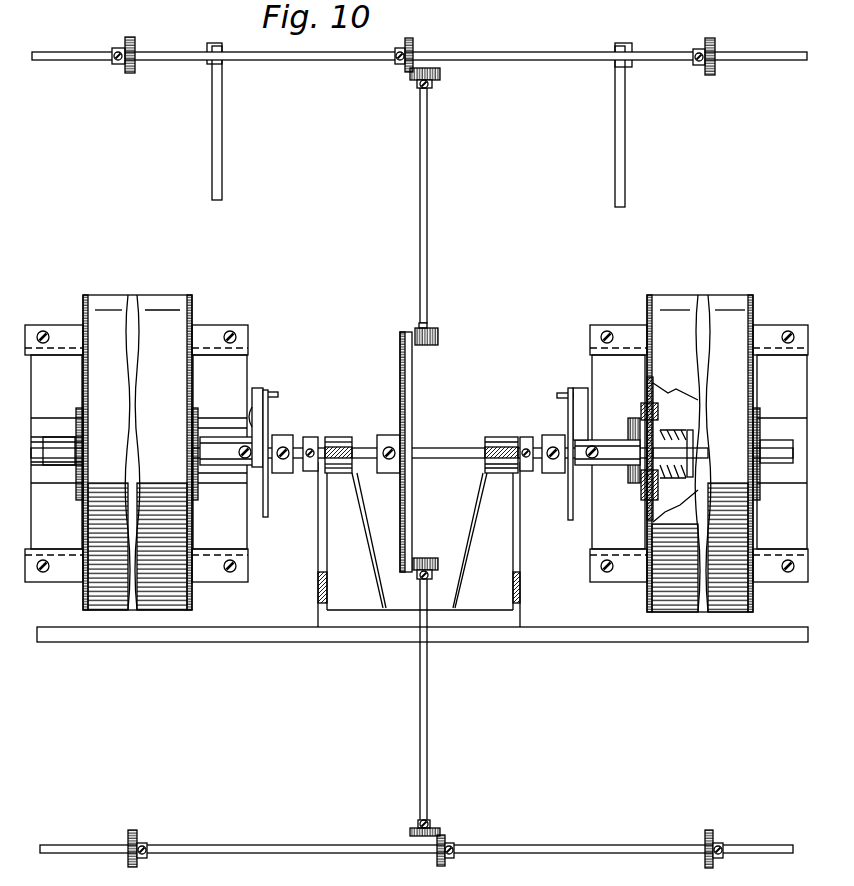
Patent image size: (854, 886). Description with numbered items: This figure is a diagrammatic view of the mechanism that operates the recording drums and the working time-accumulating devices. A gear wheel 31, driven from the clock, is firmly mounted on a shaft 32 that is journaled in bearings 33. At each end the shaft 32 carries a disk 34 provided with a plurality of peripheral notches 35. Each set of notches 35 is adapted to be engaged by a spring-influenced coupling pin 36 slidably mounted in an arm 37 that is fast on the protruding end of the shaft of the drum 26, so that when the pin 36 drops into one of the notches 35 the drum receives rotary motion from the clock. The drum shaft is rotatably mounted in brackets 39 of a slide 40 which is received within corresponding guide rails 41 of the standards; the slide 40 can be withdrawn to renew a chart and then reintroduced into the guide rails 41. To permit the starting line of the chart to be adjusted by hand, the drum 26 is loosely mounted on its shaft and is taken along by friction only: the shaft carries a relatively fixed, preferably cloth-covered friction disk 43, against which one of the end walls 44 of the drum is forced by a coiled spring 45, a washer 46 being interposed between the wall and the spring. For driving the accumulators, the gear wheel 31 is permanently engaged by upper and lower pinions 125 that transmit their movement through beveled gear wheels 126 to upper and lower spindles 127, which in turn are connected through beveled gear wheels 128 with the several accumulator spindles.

The drum 26 is at (418, 453).
The gear wheel 31 is at (413, 387).
The shaft 32 is at (445, 448).
The bearings 33 is at (338, 437).
The disk 34 is at (269, 507).
The peripheral notches 35 is at (566, 455).
The coupling pin 36 is at (270, 391).
The arm 37 is at (260, 427).
The brackets 39 is at (73, 418).
The slide 40 is at (419, 454).
The guide rails 41 is at (244, 563).
The friction disk 43 is at (196, 499).
The end wall 44 is at (651, 386).
The coiled spring 45 is at (678, 430).
The washer 46 is at (690, 416).
The pinions 125 is at (440, 338).
The beveled gear wheels 126 is at (424, 69).
The spindles 127 is at (306, 61).
The beveled gear wheels 128 is at (716, 50).